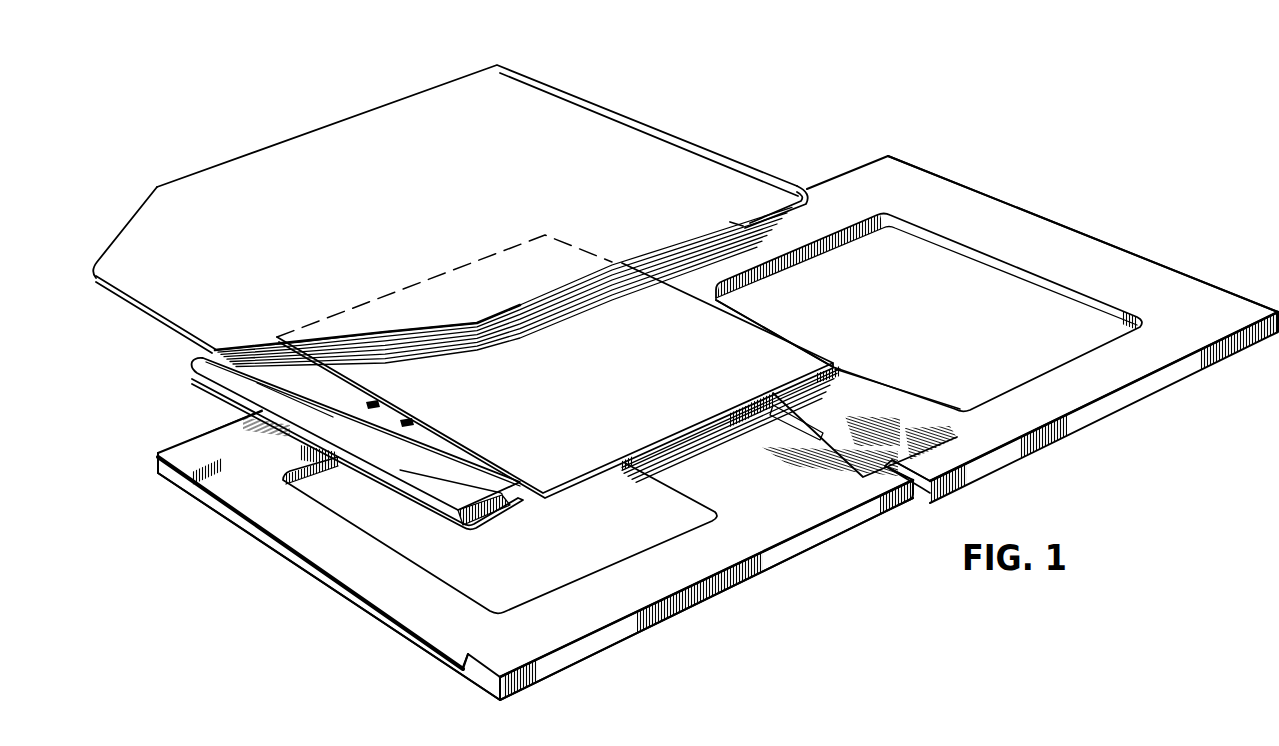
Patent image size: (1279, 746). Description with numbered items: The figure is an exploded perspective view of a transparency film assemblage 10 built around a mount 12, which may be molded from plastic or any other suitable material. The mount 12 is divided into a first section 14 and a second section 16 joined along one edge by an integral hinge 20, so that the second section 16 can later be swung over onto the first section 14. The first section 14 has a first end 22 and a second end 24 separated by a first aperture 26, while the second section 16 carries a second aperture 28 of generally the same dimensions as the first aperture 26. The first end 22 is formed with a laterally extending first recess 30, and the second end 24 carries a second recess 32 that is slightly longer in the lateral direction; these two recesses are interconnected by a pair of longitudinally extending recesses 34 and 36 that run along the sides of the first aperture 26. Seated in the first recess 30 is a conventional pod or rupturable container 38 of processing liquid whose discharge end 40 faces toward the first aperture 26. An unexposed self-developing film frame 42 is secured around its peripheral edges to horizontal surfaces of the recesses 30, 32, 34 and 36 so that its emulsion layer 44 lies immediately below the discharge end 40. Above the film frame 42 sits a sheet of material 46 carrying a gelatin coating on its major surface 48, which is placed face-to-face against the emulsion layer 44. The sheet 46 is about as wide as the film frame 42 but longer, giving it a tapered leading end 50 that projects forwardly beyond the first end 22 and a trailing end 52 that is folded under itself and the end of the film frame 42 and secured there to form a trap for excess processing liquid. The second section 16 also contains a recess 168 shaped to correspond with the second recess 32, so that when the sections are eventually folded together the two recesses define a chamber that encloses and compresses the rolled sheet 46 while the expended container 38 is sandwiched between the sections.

The transparency film assemblage 10 is at (750, 101).
The mount 12 is at (928, 157).
The first section 14 is at (577, 625).
The second section 16 is at (1103, 381).
The integral hinge 20 is at (857, 455).
The first end 22 is at (374, 610).
The second end 24 is at (898, 500).
The first aperture 26 is at (457, 593).
The second aperture 28 is at (1027, 280).
The first recess 30 is at (242, 508).
The second recess 32 is at (813, 492).
The longitudinally extending recess 34 is at (287, 452).
The longitudinally extending recess 36 is at (672, 551).
The pod or rupturable container 38 is at (428, 472).
The discharge end 40 is at (469, 462).
The film frame 42 is at (752, 345).
The emulsion layer 44 is at (560, 377).
The sheet of material 46 is at (614, 106).
The gelatin coated surface 48 is at (608, 268).
The tapered leading end 50 is at (155, 273).
The trailing end 52 is at (793, 210).
The recess 168 is at (838, 405).